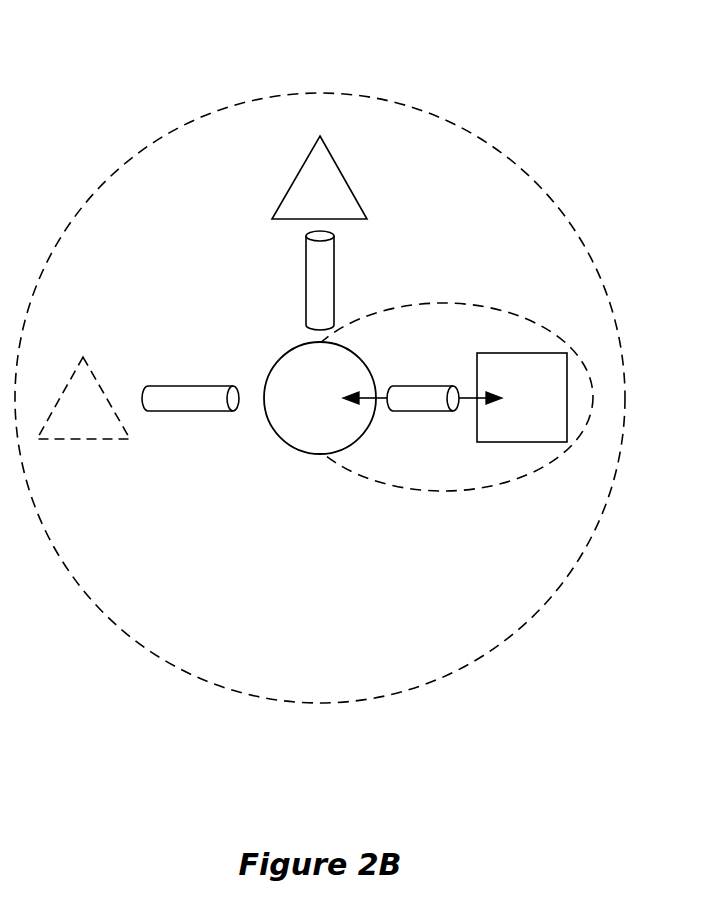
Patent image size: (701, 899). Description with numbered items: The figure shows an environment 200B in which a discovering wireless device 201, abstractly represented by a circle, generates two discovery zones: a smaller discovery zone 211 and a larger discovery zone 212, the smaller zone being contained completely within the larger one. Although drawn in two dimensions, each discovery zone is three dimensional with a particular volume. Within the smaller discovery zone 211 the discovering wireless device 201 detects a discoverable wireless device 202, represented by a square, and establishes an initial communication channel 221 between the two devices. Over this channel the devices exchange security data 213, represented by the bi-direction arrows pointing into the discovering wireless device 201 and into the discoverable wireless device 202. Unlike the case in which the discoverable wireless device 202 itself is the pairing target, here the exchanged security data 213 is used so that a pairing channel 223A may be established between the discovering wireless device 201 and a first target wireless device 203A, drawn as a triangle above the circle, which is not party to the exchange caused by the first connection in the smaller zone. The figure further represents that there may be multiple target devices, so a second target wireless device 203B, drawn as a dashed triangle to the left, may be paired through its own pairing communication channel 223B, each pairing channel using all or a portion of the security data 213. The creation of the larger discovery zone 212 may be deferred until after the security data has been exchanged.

The environment 200B is at (343, 39).
The larger discovery zone 212 is at (478, 137).
The smaller discovery zone 211 is at (535, 319).
The discovering wireless device 201 is at (304, 388).
The discoverable wireless device 202 is at (506, 388).
The first target wireless device 203A is at (298, 203).
The second target wireless device 203B is at (61, 427).
The initial communication channel 221 is at (415, 383).
The pairing channel 223A is at (334, 262).
The pairing communication channel 223B is at (193, 411).
The security data 213 is at (347, 405).